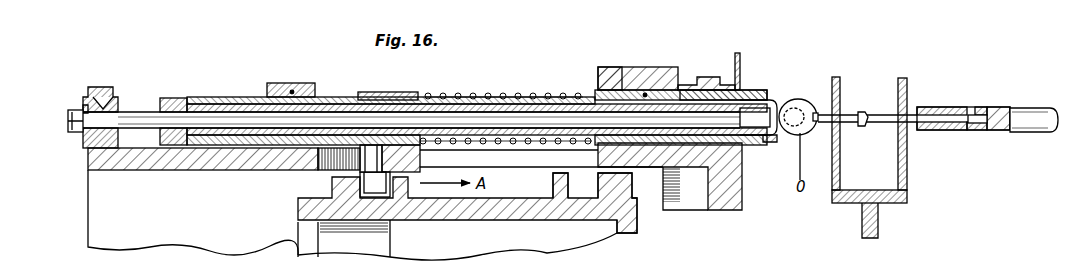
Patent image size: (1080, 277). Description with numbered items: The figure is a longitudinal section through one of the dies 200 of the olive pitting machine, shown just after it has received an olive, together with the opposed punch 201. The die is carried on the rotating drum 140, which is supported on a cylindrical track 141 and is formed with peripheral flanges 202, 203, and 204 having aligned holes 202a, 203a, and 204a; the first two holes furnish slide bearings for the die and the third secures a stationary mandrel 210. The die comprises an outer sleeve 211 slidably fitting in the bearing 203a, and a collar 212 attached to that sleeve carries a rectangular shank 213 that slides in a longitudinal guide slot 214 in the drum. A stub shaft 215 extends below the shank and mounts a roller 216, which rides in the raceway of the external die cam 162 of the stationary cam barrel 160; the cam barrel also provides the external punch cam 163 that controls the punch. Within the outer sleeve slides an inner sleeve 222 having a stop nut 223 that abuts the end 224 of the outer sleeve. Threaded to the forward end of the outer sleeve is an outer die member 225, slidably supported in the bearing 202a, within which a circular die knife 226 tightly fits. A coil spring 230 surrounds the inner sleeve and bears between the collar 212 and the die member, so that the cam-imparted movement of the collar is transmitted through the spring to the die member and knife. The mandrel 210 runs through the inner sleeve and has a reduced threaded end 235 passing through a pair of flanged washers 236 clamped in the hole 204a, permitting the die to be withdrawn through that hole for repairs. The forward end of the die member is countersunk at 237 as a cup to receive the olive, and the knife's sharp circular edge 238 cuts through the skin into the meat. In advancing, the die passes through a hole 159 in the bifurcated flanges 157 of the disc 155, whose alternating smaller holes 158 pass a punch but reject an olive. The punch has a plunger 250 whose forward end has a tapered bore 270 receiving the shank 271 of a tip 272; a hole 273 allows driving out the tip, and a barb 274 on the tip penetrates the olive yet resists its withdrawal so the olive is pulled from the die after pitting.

The drum 140 is at (88, 200).
The cylindrical track 141 is at (729, 76).
The disc 155 is at (879, 228).
The bifurcated annular flanges 157 is at (898, 173).
The holes 158 is at (898, 110).
The holes 159 is at (841, 96).
The cam barrel 160 is at (297, 242).
The external die cam 162 is at (404, 200).
The external punch cam 163 is at (575, 198).
The die 200 is at (760, 85).
The punch 201 is at (964, 104).
The peripheral flange 202 is at (636, 68).
The hole 202a is at (646, 93).
The peripheral flange 203 is at (288, 85).
The hole 203a is at (293, 91).
The peripheral flange 204 is at (102, 96).
The hole 204a is at (105, 100).
The stationary mandrel 210 is at (140, 116).
The outer sleeve 211 is at (246, 97).
The collar 212 is at (413, 93).
The rectangular shank 213 is at (422, 160).
The longitudinal guide slot 214 is at (528, 160).
The stub shaft 215 is at (358, 163).
The roller 216 is at (378, 190).
The inner sleeve 222 is at (337, 107).
The stop nut 223 is at (181, 99).
The end of the sleeve 224 is at (182, 142).
The outer die member 225 is at (621, 68).
The circular die knife 226 is at (690, 99).
The coil spring 230 is at (533, 94).
The reduced threaded end 235 is at (78, 129).
The flanged washers 236 is at (86, 108).
The countersunk recess 237 is at (774, 143).
The sharp circular edge 238 is at (795, 103).
The plunger 250 is at (1031, 110).
The tapered bore 270 is at (932, 108).
The shank 271 is at (938, 129).
The tip 272 is at (828, 124).
The hole 273 is at (976, 128).
The barb 274 is at (864, 127).